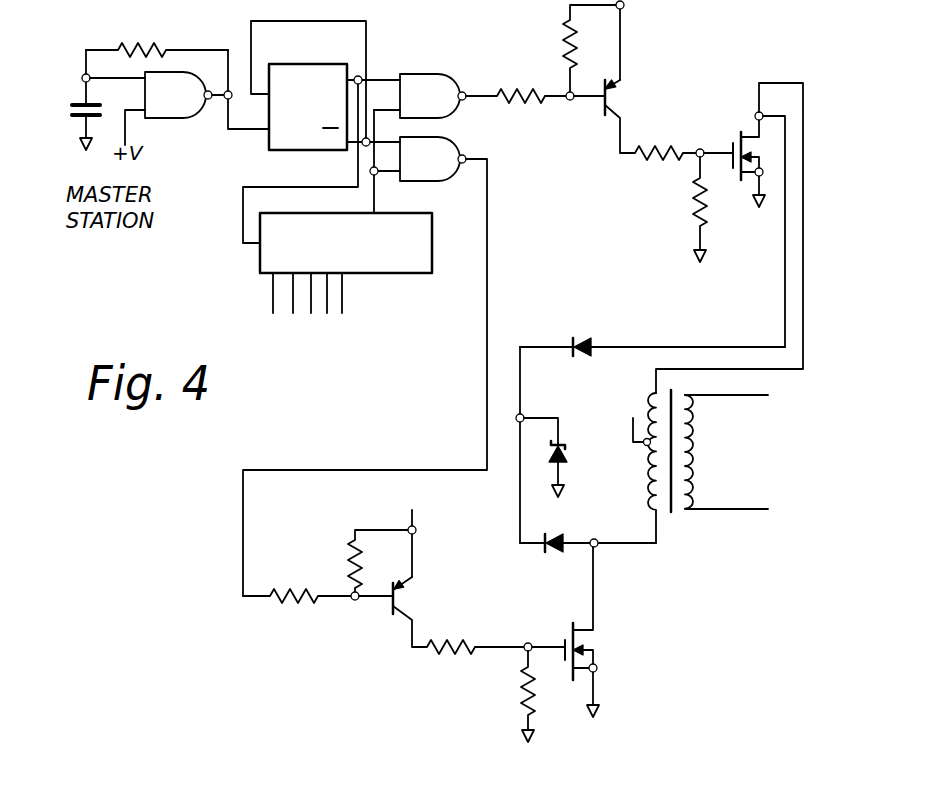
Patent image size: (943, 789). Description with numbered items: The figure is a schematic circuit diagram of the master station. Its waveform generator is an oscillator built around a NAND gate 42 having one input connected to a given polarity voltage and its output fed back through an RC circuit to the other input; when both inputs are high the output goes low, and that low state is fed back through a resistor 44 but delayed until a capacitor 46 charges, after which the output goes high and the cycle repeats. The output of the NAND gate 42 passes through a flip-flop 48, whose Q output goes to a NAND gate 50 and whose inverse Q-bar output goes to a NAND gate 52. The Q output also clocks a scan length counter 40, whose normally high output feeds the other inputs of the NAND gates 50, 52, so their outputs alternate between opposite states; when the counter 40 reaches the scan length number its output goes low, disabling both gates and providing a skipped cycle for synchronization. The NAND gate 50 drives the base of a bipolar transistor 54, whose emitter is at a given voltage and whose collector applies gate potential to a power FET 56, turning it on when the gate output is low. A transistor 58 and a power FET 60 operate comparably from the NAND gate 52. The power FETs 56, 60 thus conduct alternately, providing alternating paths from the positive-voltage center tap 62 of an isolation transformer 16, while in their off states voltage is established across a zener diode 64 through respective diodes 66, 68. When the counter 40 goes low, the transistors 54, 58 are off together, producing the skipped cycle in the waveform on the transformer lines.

The isolation transformer 16 is at (681, 386).
The scan length counter 40 is at (433, 246).
The NAND gate 42 is at (172, 112).
The resistor 44 is at (128, 40).
The capacitor 46 is at (78, 100).
The flip-flop 48 is at (322, 66).
The NAND gate 50 is at (452, 81).
The NAND gate 52 is at (458, 146).
The bipolar transistor 54 is at (624, 101).
The power FET 56 is at (745, 128).
The bipolar transistor 58 is at (414, 602).
The power FET 60 is at (562, 640).
The center tap 62 is at (643, 448).
The zener diode 64 is at (572, 453).
The diode 66 is at (583, 342).
The diode 68 is at (572, 540).